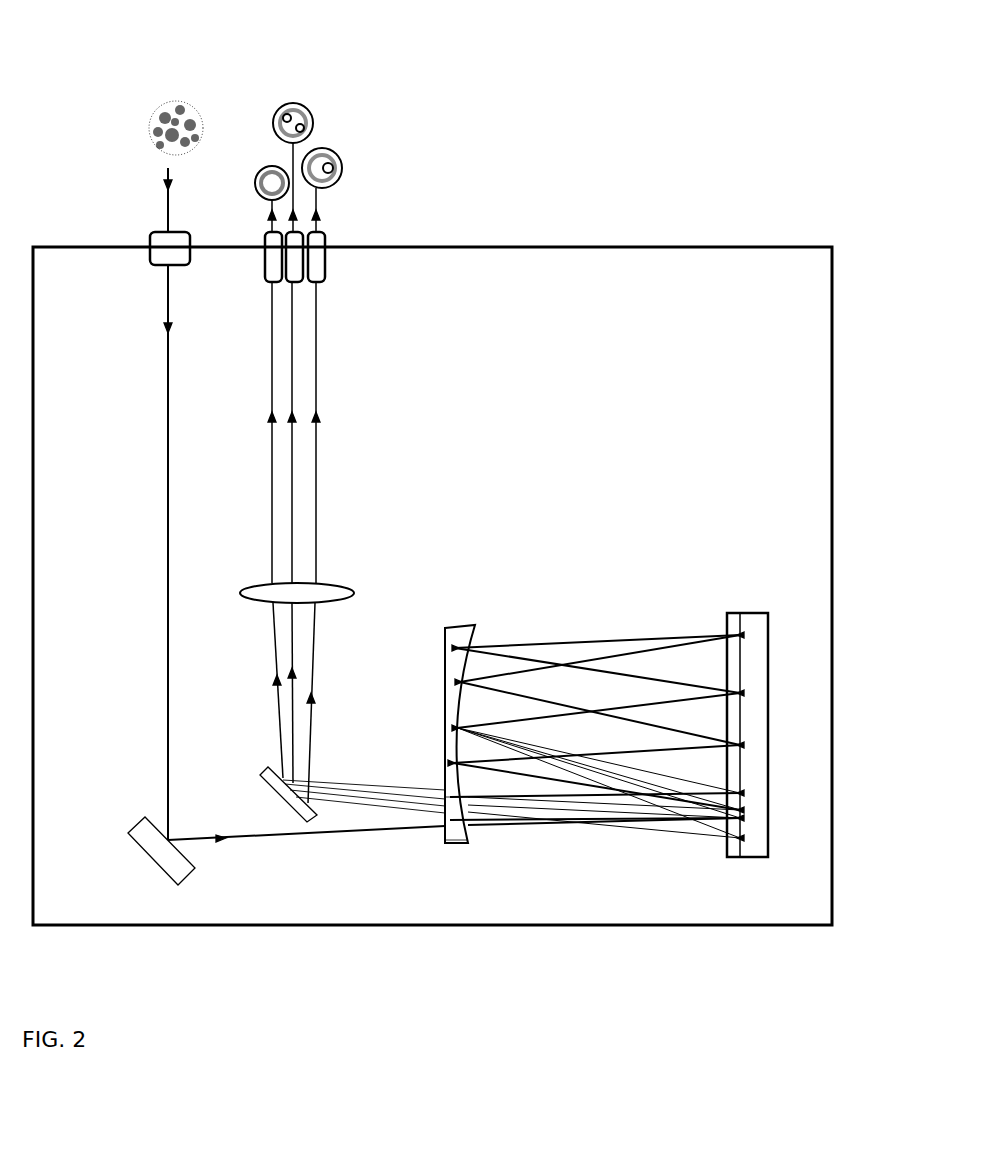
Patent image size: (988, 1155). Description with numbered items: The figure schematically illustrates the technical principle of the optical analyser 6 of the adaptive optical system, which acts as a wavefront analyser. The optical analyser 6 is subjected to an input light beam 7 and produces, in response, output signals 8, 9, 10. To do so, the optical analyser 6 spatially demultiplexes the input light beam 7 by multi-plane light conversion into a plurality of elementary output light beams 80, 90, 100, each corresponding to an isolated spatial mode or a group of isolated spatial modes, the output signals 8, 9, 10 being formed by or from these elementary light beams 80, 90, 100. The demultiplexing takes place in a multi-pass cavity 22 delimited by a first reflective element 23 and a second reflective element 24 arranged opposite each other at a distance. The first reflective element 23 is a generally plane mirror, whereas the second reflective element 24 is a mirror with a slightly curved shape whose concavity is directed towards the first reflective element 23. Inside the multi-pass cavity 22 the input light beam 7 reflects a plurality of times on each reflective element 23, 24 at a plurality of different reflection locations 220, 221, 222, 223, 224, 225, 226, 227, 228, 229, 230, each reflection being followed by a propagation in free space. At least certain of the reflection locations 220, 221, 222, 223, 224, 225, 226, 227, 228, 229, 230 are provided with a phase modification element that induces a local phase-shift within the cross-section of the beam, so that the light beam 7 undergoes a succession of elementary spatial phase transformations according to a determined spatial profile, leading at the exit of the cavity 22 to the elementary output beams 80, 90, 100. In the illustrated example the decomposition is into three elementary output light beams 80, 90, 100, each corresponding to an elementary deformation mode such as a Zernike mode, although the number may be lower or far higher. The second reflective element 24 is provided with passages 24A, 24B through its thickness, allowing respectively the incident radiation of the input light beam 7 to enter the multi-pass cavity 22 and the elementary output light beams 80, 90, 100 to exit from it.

The optical analyser 6 is at (800, 128).
The input light beam 7 is at (165, 203).
The output signal 8 is at (266, 222).
The output signal 9 is at (290, 155).
The output signal 10 is at (318, 225).
The elementary output light beam 80 is at (272, 478).
The elementary output light beam 90 is at (293, 493).
The elementary output light beam 100 is at (316, 437).
The multi-pass cavity 22 is at (623, 762).
The first reflective element 23 is at (818, 795).
The second reflective element 24 is at (406, 751).
The passage 24A is at (445, 840).
The passage 24B is at (450, 800).
The reflection location 220 is at (745, 810).
The reflection location 221 is at (450, 763).
The reflection location 222 is at (745, 745).
The reflection location 223 is at (455, 683).
The reflection location 224 is at (745, 635).
The reflection location 225 is at (450, 648).
The reflection location 226 is at (745, 693).
The reflection location 227 is at (452, 728).
The reflection location 228 is at (745, 793).
The reflection location 229 is at (745, 818).
The reflection location 230 is at (745, 838).